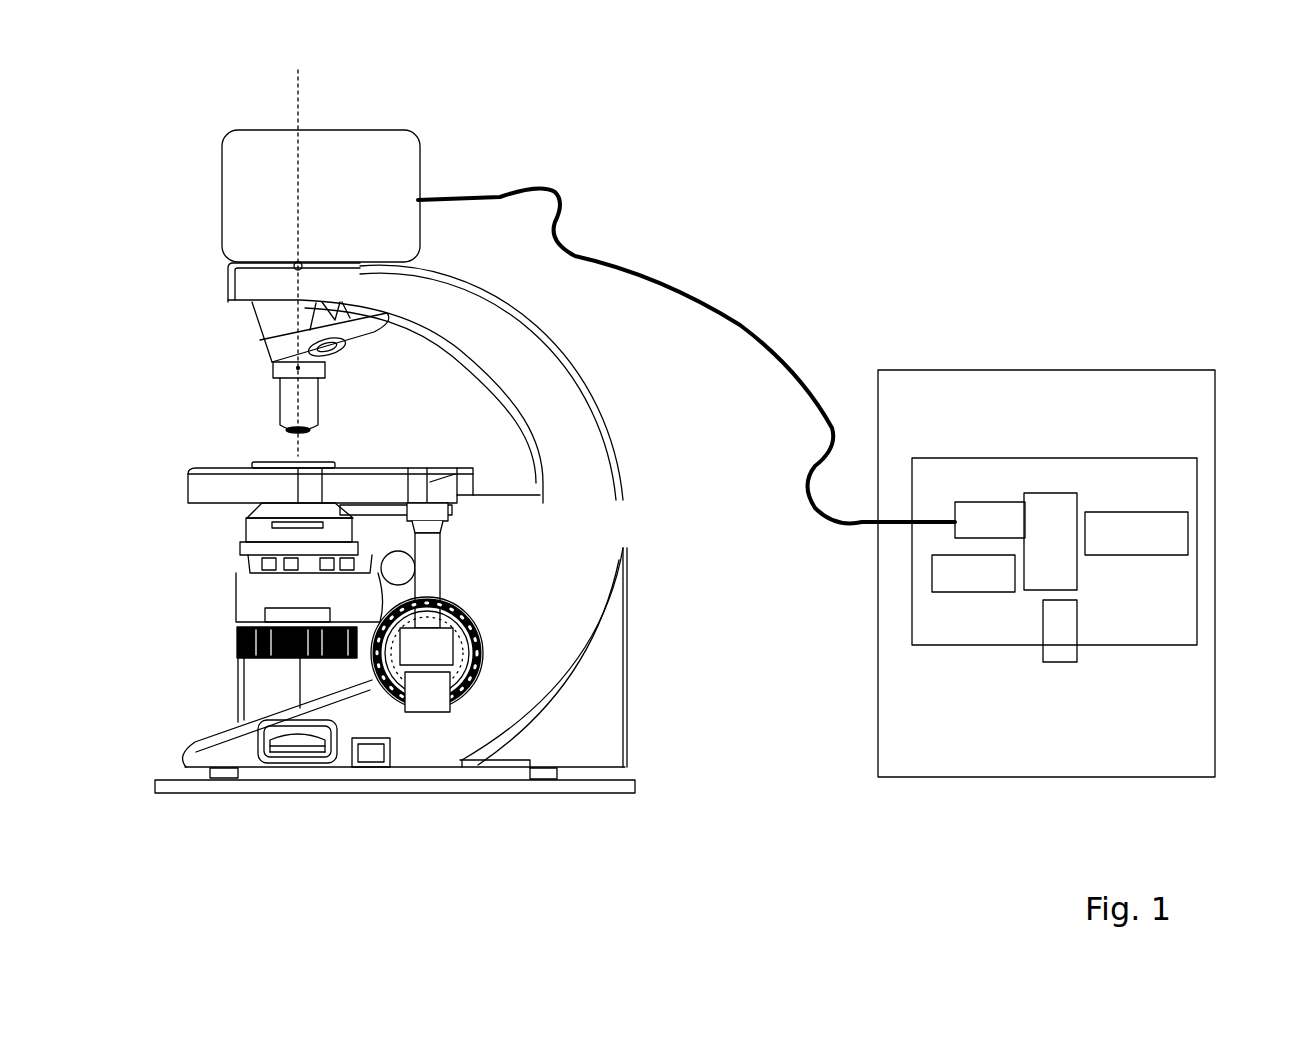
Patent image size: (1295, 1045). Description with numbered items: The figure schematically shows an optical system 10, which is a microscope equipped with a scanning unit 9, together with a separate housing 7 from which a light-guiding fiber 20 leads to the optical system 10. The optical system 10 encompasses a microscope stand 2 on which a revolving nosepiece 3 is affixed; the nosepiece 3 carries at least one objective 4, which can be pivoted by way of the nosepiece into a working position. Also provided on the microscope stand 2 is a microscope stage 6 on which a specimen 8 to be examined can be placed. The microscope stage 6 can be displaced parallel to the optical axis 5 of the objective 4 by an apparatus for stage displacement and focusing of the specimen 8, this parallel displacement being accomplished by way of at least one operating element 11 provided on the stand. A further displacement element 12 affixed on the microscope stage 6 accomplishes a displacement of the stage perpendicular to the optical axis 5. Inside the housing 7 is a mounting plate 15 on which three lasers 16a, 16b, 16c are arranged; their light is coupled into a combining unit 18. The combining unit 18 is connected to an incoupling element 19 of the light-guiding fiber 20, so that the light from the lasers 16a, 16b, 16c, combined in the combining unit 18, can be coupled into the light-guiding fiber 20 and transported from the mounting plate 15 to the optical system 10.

The microscope stand 2 is at (603, 535).
The revolving nosepiece 3 is at (268, 330).
The objective 4 is at (320, 404).
The optical axis 5 is at (300, 127).
The microscope stage 6 is at (222, 492).
The housing 7 is at (970, 368).
The specimen 8 is at (272, 464).
The scanning unit 9 is at (376, 197).
The optical system 10 is at (627, 399).
The operating element 11 is at (482, 632).
The displacement element 12 is at (428, 562).
The mounting plate 15 is at (1118, 458).
The laser 16a is at (1172, 520).
The laser 16b is at (1070, 617).
The laser 16c is at (947, 582).
The combining unit 18 is at (1042, 500).
The incoupling element 19 is at (967, 506).
The light-guiding fiber 20 is at (710, 300).